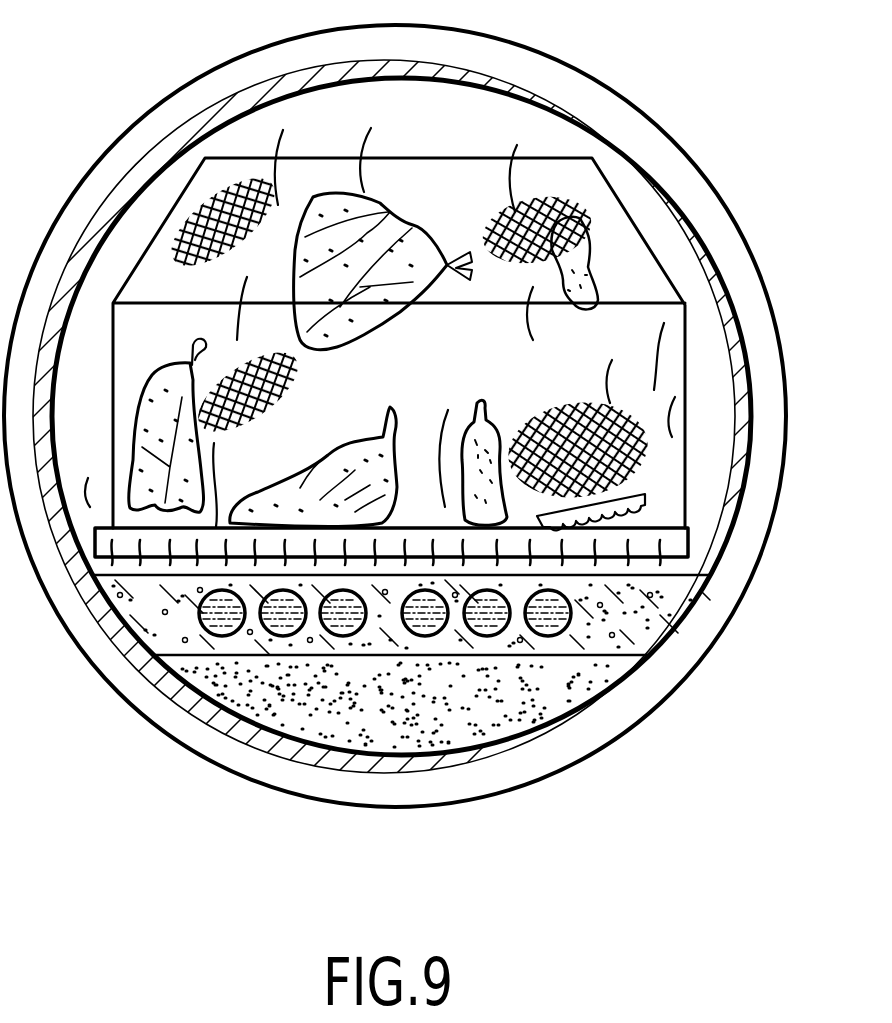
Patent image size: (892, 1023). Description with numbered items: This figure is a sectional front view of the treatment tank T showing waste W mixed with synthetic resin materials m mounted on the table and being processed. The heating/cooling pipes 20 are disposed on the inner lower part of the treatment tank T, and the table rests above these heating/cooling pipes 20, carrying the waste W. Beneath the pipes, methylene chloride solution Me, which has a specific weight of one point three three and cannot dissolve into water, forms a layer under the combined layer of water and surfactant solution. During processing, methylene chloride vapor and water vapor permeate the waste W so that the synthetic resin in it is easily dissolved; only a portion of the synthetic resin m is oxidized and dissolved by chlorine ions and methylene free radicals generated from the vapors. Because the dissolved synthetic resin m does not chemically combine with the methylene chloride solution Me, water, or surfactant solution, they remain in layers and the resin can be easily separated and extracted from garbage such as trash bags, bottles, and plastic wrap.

The treatment tank T is at (160, 150).
The synthetic resin materials m is at (392, 229).
The waste W is at (404, 366).
The heating/cooling pipes 20 is at (277, 622).
The methylene chloride solution Me is at (380, 732).